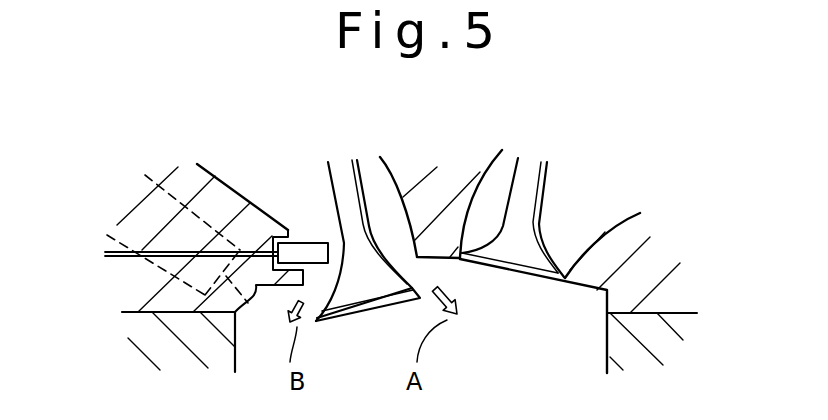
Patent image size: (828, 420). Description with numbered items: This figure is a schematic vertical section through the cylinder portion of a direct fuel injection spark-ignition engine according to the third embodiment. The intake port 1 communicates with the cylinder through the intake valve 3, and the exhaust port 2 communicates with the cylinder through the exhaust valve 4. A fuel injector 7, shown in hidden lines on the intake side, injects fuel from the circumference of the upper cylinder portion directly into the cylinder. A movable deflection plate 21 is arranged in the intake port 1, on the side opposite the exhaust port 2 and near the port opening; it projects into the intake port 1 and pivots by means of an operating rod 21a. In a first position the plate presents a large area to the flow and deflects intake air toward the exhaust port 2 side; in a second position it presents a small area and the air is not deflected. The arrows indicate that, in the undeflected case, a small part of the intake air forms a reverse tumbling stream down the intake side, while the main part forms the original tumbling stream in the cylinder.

The intake port 1 is at (260, 172).
The exhaust port 2 is at (567, 210).
The intake valve 3 is at (350, 180).
The exhaust valve 4 is at (525, 202).
The fuel injector 7 is at (152, 266).
The movable deflection plate 21 is at (307, 243).
The operating rod 21a is at (160, 250).